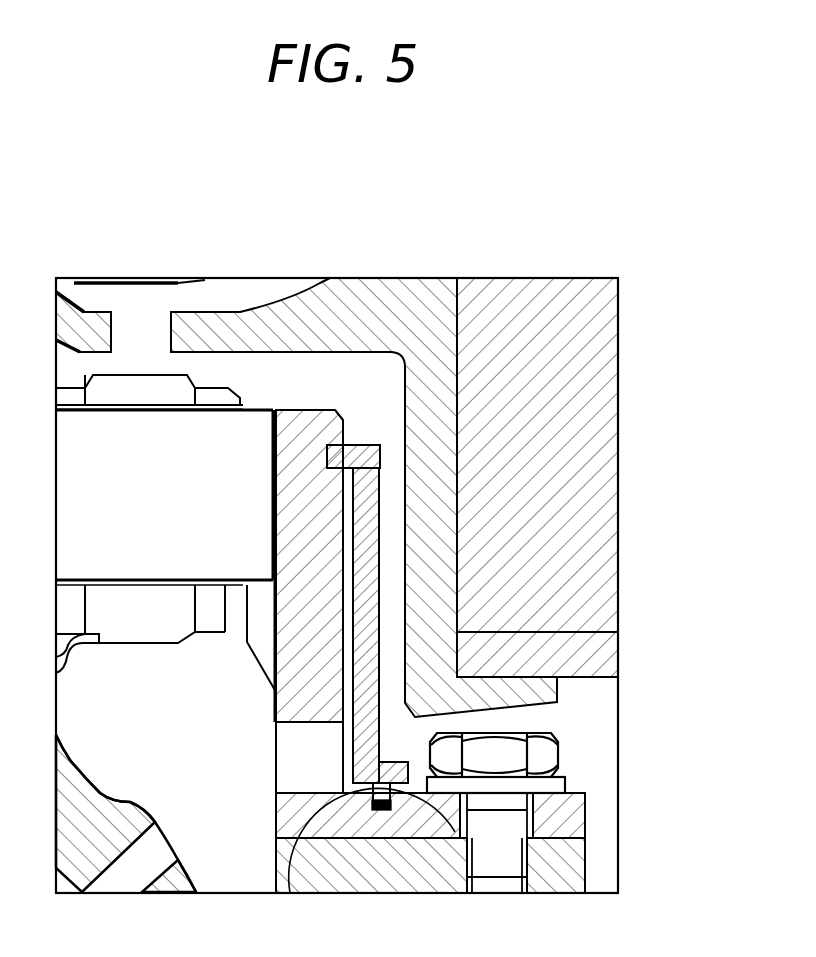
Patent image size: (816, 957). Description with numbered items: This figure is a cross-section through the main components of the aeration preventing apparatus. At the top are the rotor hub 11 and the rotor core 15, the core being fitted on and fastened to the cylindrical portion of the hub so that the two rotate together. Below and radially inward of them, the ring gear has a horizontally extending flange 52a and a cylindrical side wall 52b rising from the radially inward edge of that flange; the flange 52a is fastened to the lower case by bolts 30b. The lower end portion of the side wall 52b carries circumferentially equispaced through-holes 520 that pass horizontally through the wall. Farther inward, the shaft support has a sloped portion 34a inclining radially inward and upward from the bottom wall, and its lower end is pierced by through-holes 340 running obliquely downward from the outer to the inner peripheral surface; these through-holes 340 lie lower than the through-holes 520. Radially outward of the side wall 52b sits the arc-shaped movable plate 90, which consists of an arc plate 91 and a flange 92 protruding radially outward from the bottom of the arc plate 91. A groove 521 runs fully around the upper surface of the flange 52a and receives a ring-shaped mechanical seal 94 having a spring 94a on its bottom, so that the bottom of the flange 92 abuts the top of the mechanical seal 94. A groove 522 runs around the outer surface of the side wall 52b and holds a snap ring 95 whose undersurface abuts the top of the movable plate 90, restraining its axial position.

The rotor hub 11 is at (430, 540).
The rotor core 15 is at (567, 435).
The bolts 30b is at (558, 752).
The sloped portion 34a is at (130, 800).
The through-holes 340 is at (128, 858).
The flange 52a is at (416, 838).
The side wall 52b is at (298, 478).
The through-holes 520 is at (310, 723).
The groove 521 is at (465, 840).
The groove 522 is at (334, 442).
The movable plate 90 is at (450, 592).
The arc plate 91 is at (353, 517).
The flange 92 is at (398, 760).
The mechanical seal 94 is at (291, 893).
The spring 94a is at (378, 808).
The snap ring 95 is at (361, 444).